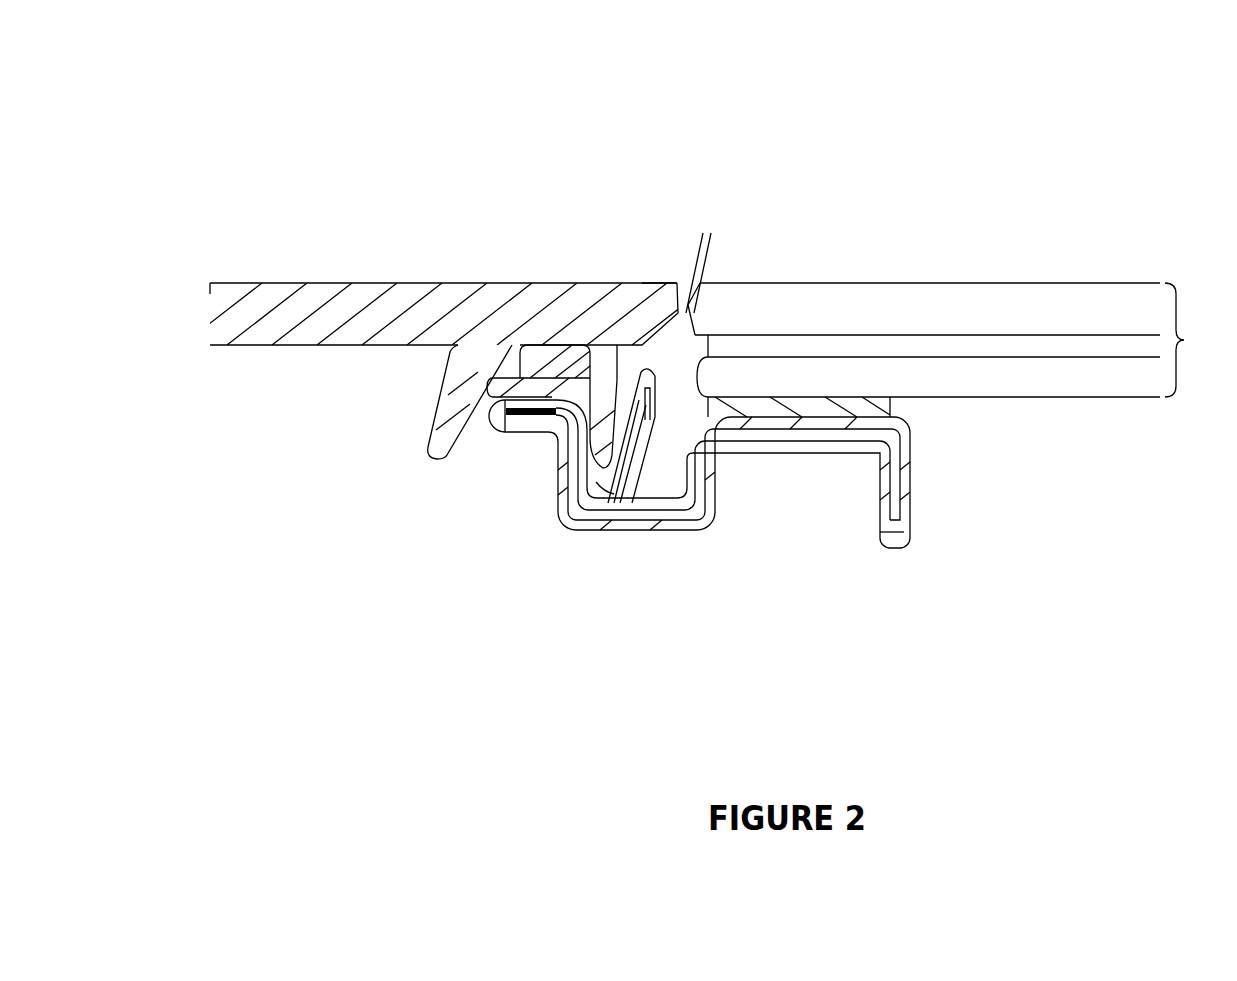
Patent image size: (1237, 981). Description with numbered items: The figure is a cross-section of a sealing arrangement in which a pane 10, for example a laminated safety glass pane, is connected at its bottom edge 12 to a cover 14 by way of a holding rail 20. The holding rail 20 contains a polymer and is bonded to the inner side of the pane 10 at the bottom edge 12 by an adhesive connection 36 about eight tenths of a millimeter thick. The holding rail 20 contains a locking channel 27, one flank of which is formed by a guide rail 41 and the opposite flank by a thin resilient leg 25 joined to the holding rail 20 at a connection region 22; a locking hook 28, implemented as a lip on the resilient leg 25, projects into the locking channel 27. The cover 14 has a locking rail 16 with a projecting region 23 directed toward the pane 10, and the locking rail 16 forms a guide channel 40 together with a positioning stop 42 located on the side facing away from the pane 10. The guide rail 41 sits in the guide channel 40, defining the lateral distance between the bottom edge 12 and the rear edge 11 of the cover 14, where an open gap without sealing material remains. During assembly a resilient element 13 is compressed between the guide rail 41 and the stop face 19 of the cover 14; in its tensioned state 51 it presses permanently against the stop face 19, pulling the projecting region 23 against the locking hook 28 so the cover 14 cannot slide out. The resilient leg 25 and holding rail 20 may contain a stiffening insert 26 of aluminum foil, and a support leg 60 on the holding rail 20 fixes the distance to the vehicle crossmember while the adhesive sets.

The pane 10 is at (956, 340).
The rear edge 11 is at (672, 282).
The bottom edge 12 is at (720, 302).
The resilient element 13 is at (570, 362).
The cover 14 is at (295, 302).
The locking rail 16 is at (610, 427).
The stop face 19 is at (543, 343).
The holding rail 20 is at (787, 443).
The connection region 22 is at (615, 440).
The projecting region 23 is at (622, 437).
The resilient leg 25 is at (620, 455).
The stiffening insert 26 is at (903, 485).
The locking channel 27 is at (595, 473).
The locking hook 28 is at (630, 397).
The adhesive connection 36 is at (828, 405).
The guide channel 40 is at (517, 365).
The guide rail 41 is at (513, 428).
The positioning stop 42 is at (452, 397).
The tensioned state 51 is at (572, 364).
The support leg 60 is at (917, 545).